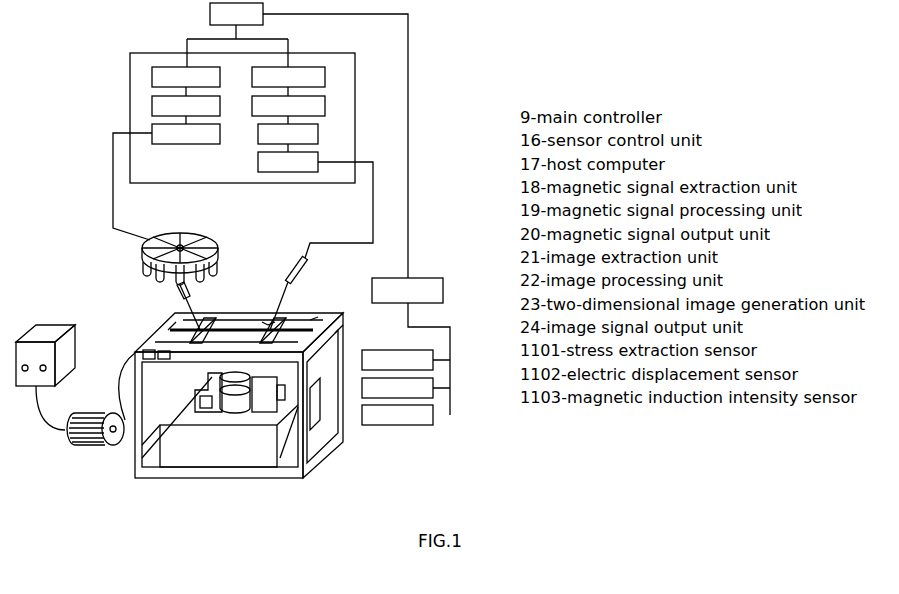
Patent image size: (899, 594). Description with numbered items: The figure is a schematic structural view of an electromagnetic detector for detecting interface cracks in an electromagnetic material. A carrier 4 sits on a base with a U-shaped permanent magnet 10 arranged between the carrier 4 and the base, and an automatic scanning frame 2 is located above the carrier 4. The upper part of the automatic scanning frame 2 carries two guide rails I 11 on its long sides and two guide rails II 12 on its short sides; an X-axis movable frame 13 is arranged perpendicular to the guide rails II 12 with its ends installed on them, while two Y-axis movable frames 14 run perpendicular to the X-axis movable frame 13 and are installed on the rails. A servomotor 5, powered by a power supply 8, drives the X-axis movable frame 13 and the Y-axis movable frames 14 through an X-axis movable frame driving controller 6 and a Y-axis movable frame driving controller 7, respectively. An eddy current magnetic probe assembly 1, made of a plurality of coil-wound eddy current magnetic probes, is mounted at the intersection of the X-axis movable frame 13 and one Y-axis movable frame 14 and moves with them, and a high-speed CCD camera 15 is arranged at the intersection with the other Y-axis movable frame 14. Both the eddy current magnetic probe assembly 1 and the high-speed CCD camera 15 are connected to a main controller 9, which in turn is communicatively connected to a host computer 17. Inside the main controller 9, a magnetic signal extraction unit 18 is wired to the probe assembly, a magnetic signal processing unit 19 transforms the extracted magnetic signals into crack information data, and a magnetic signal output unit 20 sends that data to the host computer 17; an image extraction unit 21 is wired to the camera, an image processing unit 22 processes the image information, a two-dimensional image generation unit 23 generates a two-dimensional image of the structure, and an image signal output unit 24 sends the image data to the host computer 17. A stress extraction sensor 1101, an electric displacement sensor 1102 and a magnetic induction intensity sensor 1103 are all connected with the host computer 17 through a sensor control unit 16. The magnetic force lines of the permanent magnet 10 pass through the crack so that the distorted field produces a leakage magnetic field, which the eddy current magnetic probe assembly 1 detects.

The eddy current magnetic probe assembly 1 is at (258, 462).
The automatic scanning frame 2 is at (140, 345).
The carrier 4 is at (248, 377).
The servomotor 5 is at (88, 448).
The X-axis movable frame driving controller 6 is at (149, 360).
The Y-axis movable frame driving controller 7 is at (163, 360).
The power supply 8 is at (47, 325).
The main controller 9 is at (207, 183).
The permanent magnet 10 is at (268, 325).
The guide rail I 11 is at (245, 313).
The guide rail II 12 is at (335, 333).
The X-axis movable frame 13 is at (168, 330).
The Y-axis movable frame 14 is at (208, 315).
The high-speed CCD camera 15 is at (310, 320).
The sensor control unit 16 is at (443, 290).
The host computer 17 is at (210, 14).
The magnetic signal extraction unit 18 is at (152, 125).
The magnetic signal processing unit 19 is at (152, 98).
The magnetic signal output unit 20 is at (152, 72).
The image extraction unit 21 is at (318, 155).
The image processing unit 22 is at (318, 135).
The two-dimensional image generation unit 23 is at (325, 103).
The image signal output unit 24 is at (325, 72).
The stress extraction sensor 1101 is at (397, 360).
The electric displacement sensor 1102 is at (397, 388).
The magnetic induction intensity sensor 1103 is at (397, 415).